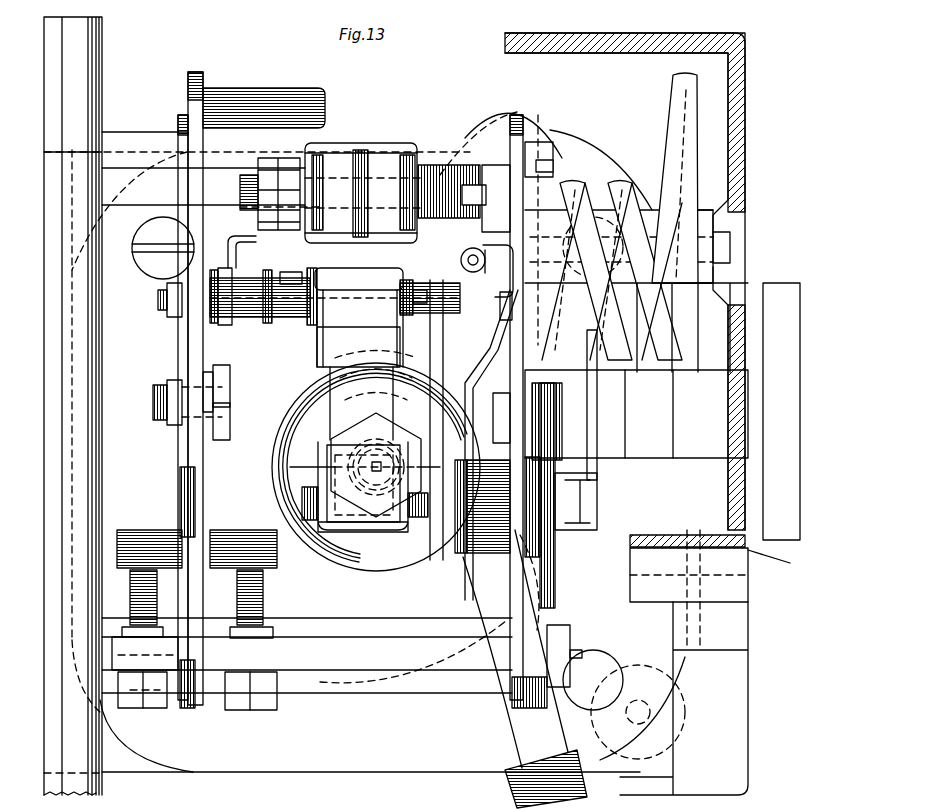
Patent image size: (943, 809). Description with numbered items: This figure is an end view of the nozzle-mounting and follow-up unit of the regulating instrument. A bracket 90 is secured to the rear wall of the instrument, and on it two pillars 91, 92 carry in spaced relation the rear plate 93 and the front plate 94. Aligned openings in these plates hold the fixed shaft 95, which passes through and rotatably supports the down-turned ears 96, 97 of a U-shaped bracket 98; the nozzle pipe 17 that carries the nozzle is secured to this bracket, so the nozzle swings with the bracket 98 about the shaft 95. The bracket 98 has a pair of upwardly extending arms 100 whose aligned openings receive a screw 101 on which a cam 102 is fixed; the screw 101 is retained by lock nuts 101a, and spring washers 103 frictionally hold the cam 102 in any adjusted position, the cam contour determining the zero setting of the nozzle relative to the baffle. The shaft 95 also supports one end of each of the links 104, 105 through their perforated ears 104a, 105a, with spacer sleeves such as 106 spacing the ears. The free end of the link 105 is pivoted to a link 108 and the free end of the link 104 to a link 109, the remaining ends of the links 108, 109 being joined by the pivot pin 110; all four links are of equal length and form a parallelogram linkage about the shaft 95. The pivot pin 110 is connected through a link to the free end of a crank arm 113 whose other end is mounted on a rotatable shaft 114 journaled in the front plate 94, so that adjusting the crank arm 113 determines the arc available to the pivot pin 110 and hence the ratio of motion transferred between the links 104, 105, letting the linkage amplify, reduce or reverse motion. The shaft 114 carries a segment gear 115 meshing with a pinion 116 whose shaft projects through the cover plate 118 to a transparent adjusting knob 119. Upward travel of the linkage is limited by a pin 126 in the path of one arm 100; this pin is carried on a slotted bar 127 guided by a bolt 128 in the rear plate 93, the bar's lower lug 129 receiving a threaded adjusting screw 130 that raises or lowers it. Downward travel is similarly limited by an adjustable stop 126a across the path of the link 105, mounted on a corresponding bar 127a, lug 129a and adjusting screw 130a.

The bracket 90 is at (100, 52).
The pillar 91 is at (147, 197).
The pillar 92 is at (110, 705).
The rear plate 93 is at (182, 330).
The front plate 94 is at (549, 152).
The shaft 95 is at (167, 297).
The down-turned ear 96 is at (232, 325).
The down-turned ear 97 is at (510, 318).
The U-shaped bracket 98 is at (246, 238).
The upwardly extending arms 100 is at (367, 169).
The screw 101 is at (436, 165).
The lock nuts 101a is at (270, 160).
The cam 102 is at (362, 150).
The spring washers 103 is at (323, 178).
The link 104 is at (302, 278).
The ears 104a is at (233, 368).
The link 105 is at (332, 328).
The ears 105a is at (310, 327).
The spacer sleeve 106 is at (268, 325).
The link 108 is at (332, 383).
The link 109 is at (343, 535).
The pivot pin 110 is at (320, 545).
The crank arm 113 is at (470, 380).
The rotatable shaft 114 is at (462, 560).
The segment gear 115 is at (562, 568).
The pinion 116 is at (556, 415).
The cover plate 118 is at (740, 180).
The adjusting knob 119 is at (763, 485).
The pin 126 is at (246, 100).
The adjustable stop 126a is at (290, 274).
The bar 127 is at (197, 455).
The bar 127a is at (203, 470).
The guiding bolt 128 is at (220, 418).
The lug 129 is at (140, 528).
The lug 129a is at (225, 528).
The adjusting screw 130 is at (130, 600).
The adjusting screw 130a is at (262, 598).
The nozzle pipe 17 is at (461, 262).